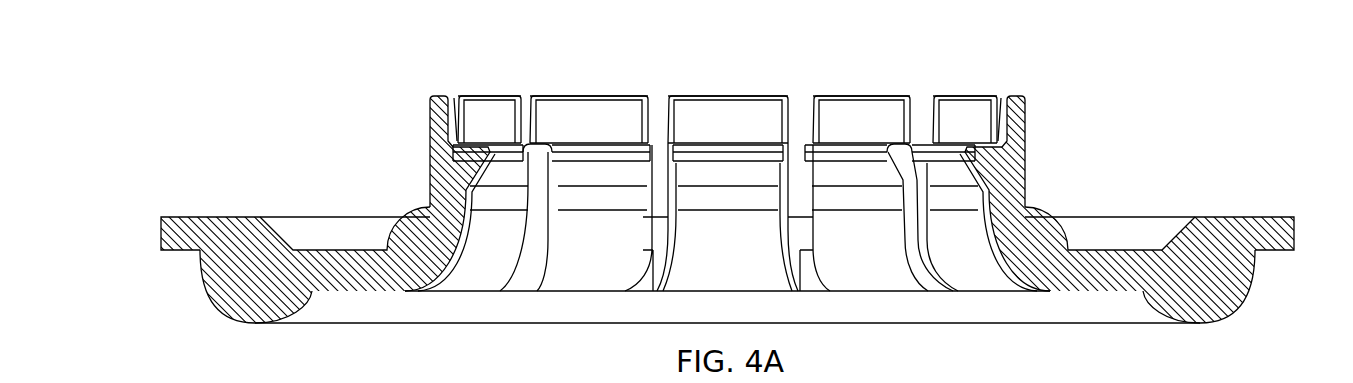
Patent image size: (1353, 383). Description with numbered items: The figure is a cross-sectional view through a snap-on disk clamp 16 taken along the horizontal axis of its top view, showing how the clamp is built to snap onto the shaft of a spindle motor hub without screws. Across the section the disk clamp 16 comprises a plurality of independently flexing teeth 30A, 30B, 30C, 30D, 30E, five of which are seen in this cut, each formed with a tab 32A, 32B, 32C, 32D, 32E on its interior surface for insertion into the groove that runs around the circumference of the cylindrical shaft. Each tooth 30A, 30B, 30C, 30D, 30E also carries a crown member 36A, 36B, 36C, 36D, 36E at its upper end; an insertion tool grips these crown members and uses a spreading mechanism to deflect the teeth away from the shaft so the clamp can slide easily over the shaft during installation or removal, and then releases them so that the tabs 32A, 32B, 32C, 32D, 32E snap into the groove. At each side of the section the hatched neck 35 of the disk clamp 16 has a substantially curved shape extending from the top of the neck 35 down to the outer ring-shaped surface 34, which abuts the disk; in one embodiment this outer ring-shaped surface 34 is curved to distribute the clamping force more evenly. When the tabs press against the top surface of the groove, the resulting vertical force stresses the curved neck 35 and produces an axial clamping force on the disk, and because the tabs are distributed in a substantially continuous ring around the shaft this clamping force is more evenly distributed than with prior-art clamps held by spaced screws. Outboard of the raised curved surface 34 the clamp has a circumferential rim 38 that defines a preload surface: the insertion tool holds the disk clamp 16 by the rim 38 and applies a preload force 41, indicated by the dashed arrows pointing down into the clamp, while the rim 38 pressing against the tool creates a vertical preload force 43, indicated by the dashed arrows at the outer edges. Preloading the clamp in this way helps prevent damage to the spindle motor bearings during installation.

The disk clamp 16 is at (1200, 80).
The tooth 30A is at (481, 95).
The tooth 30B is at (592, 95).
The tooth 30C is at (733, 95).
The tooth 30D is at (874, 95).
The tooth 30E is at (973, 95).
The tab 32A is at (499, 183).
The tab 32B is at (589, 183).
The tab 32C is at (716, 183).
The tab 32D is at (839, 183).
The tab 32E is at (929, 183).
The outer ring-shaped surface 34 is at (251, 332).
The neck 35 is at (428, 186).
The crown member 36A is at (477, 130).
The crown member 36B is at (580, 130).
The crown member 36C is at (721, 130).
The crown member 36D is at (857, 130).
The crown member 36E is at (948, 130).
The circumferential rim 38 is at (170, 258).
The preload force 41 is at (340, 243).
The vertical preload force 43 is at (182, 258).